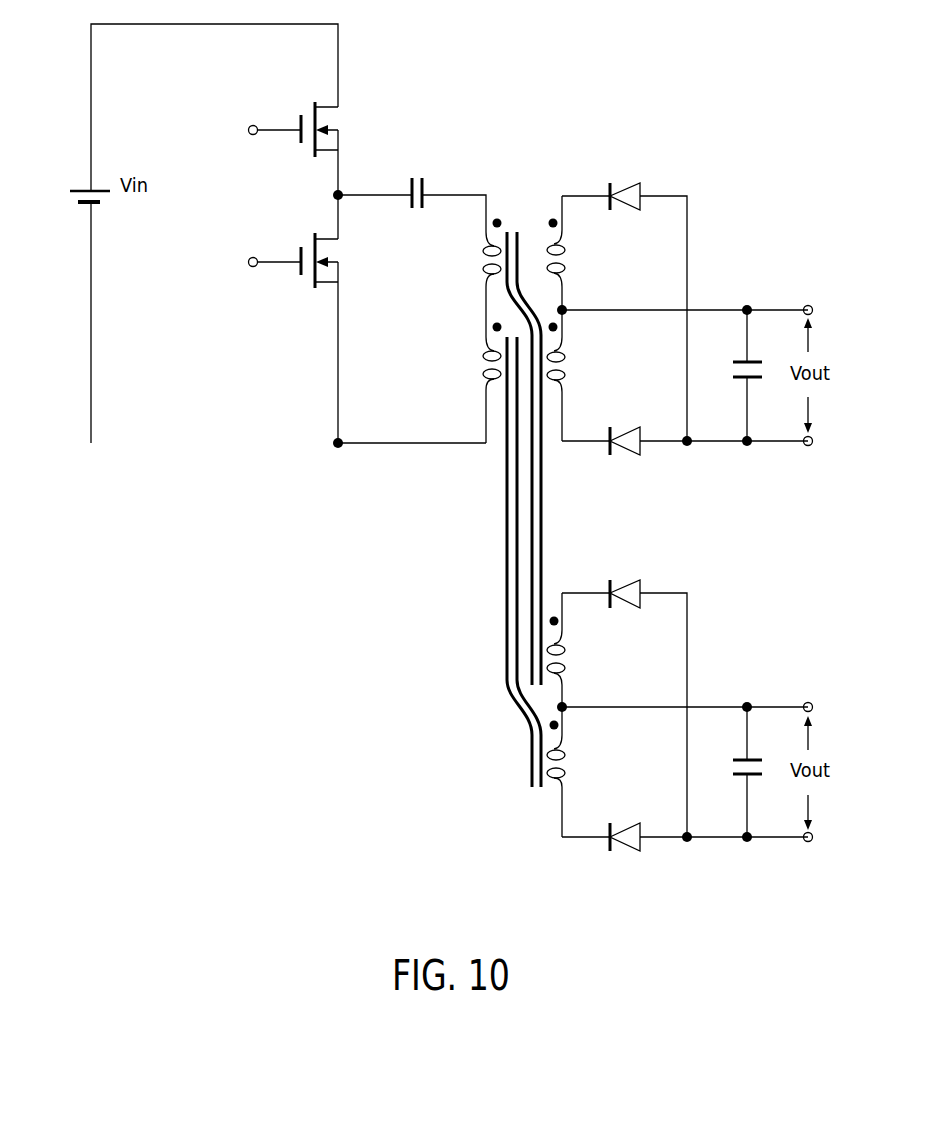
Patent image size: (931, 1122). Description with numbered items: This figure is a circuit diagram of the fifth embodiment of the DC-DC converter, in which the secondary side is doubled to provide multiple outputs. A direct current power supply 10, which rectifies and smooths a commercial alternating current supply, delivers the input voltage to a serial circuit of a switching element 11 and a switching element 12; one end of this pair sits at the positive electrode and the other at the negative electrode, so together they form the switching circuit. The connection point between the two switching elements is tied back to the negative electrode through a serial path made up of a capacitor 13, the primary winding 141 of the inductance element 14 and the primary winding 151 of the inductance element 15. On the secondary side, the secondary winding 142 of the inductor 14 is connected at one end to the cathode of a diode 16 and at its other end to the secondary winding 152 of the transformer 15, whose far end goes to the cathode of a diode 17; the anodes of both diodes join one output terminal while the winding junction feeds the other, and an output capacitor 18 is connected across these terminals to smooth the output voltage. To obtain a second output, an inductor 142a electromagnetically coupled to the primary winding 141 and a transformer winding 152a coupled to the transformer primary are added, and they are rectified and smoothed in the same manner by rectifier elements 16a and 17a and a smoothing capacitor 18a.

The direct current power supply 10 is at (75, 200).
The switching element 11 is at (300, 148).
The switching element 12 is at (300, 283).
The capacitor 13 is at (417, 176).
The inductance element 14 is at (514, 224).
The primary winding 141 is at (480, 263).
The secondary winding 142 is at (570, 258).
The inductor 142a is at (573, 655).
The inductance element 15 is at (495, 433).
The primary winding 151 is at (480, 368).
The secondary winding 152 is at (570, 362).
The transformer winding 152a is at (573, 762).
The diode 16 is at (625, 183).
The rectifier element 16a is at (625, 580).
The diode 17 is at (625, 455).
The rectifier element 17a is at (625, 852).
The output capacitor 18 is at (763, 368).
The smoothing capacitor 18a is at (763, 765).